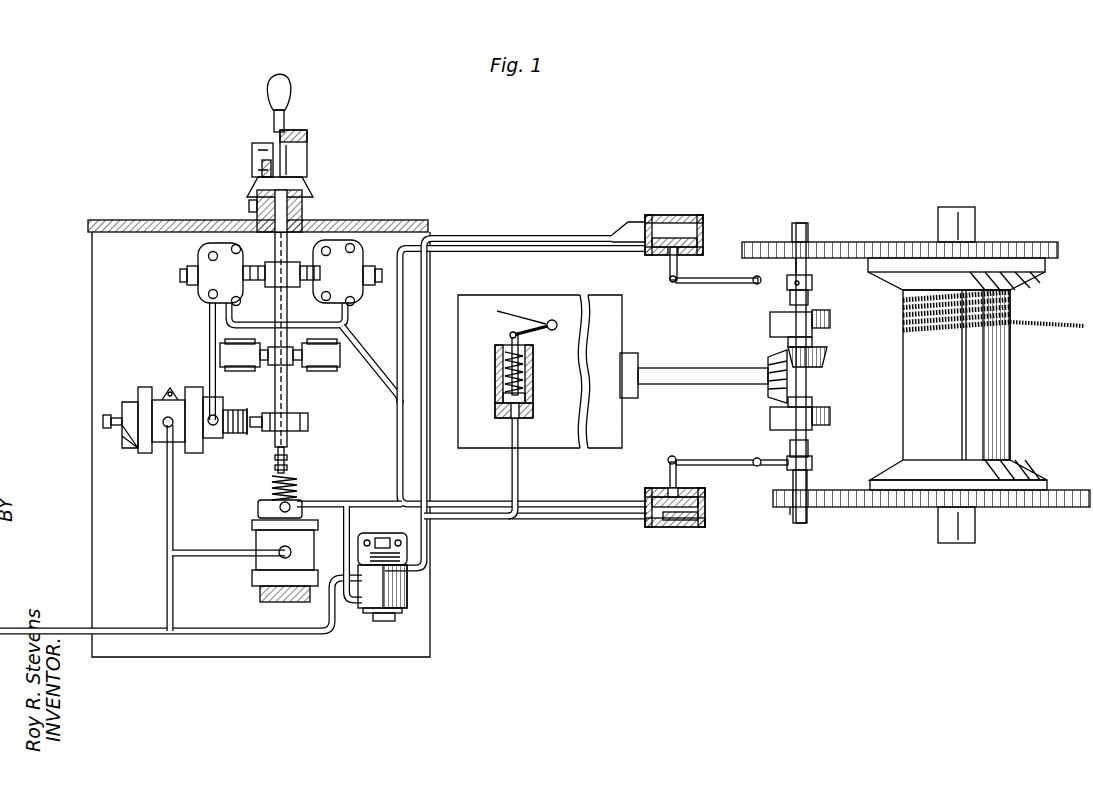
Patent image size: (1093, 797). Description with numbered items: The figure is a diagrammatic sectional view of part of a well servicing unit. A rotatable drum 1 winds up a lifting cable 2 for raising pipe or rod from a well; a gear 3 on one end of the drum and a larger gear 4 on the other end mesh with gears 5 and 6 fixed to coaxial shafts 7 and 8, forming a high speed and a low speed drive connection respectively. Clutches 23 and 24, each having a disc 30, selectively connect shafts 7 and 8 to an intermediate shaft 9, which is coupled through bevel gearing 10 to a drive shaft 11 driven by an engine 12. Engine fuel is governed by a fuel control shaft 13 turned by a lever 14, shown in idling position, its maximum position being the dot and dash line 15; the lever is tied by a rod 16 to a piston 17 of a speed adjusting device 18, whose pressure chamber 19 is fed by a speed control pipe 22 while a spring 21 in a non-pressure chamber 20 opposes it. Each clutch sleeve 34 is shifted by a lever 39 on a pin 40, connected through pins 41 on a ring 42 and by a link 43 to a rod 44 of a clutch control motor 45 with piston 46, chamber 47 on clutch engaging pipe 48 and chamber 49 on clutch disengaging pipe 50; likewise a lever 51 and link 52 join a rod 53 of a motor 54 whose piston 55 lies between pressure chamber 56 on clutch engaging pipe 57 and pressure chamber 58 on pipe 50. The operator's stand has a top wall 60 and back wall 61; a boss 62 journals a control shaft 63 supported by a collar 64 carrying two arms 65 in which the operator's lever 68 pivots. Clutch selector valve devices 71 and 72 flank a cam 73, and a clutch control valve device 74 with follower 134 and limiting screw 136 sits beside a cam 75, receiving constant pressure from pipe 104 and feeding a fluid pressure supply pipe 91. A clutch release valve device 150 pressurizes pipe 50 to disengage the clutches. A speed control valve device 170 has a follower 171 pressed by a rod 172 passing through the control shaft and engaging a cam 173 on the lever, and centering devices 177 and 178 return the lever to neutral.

The drum 1 is at (1012, 426).
The lifting cable 2 is at (1060, 325).
The gear 3 is at (221, 207).
The larger gear 4 is at (267, 82).
The gear 5 is at (160, 284).
The gear 6 is at (187, 368).
The shaft 7 is at (62, 434).
The shaft 8 is at (806, 474).
The intermediate shaft 9 is at (806, 383).
The bevel gearing 10 is at (768, 360).
The drive shaft 11 is at (700, 372).
The engine 12 is at (618, 323).
The fuel control shaft 13 is at (563, 323).
The lever 14 is at (535, 337).
The dot and dash line 15 is at (497, 311).
The rod 16 is at (525, 374).
The piston 17 is at (526, 405).
The speed adjusting device 18 is at (537, 414).
The pressure chamber 19 is at (512, 418).
The non-pressure chamber 20 is at (497, 383).
The spring 21 is at (503, 366).
The speed control pipe 22 is at (374, 494).
The clutch 23 is at (768, 326).
The clutch 24 is at (768, 420).
The disc 30 is at (817, 312).
The sleeve 34 is at (788, 298).
The lever 39 is at (703, 282).
The pin 40 is at (743, 292).
The pins 41 is at (812, 279).
The ring 42 is at (812, 287).
The link 43 is at (668, 282).
The rod 44 is at (668, 260).
The clutch control motor 45 is at (648, 214).
The piston 46 is at (697, 243).
The chamber 47 is at (682, 254).
The clutch engaging pipe 48 is at (553, 252).
The chamber 49 is at (694, 214).
The clutch disengaging pipe 50 is at (591, 235).
The lever 51 is at (735, 465).
The link 52 is at (669, 462).
The rod 53 is at (668, 482).
The clutch control motor 54 is at (662, 527).
The piston 55 is at (705, 502).
The pressure chamber 56 is at (690, 497).
The clutch engaging pipe 57 is at (586, 490).
The pressure chamber 58 is at (700, 516).
The top wall 60 is at (140, 208).
The back wall 61 is at (92, 263).
The boss 62 is at (305, 200).
The control shaft 63 is at (290, 401).
The collar 64 is at (303, 178).
The arms 65 is at (252, 146).
The operator's lever 68 is at (293, 93).
The clutch selector valve device 71 is at (200, 294).
The clutch selector valve device 72 is at (356, 295).
The cam 73 is at (266, 267).
The clutch control valve device 74 is at (138, 457).
The cam 75 is at (305, 432).
The fluid pressure supply pipe 91 is at (209, 327).
The pipe 104 is at (147, 632).
The follower 134 is at (252, 435).
The limiting screw 136 is at (112, 414).
The clutch release valve device 150 is at (410, 593).
The speed control valve device 170 is at (256, 510).
The follower 171 is at (276, 468).
The rod 172 is at (290, 265).
The cam 173 is at (262, 168).
The resistance or centering device 177 is at (233, 358).
The resistance or centering device 178 is at (337, 358).